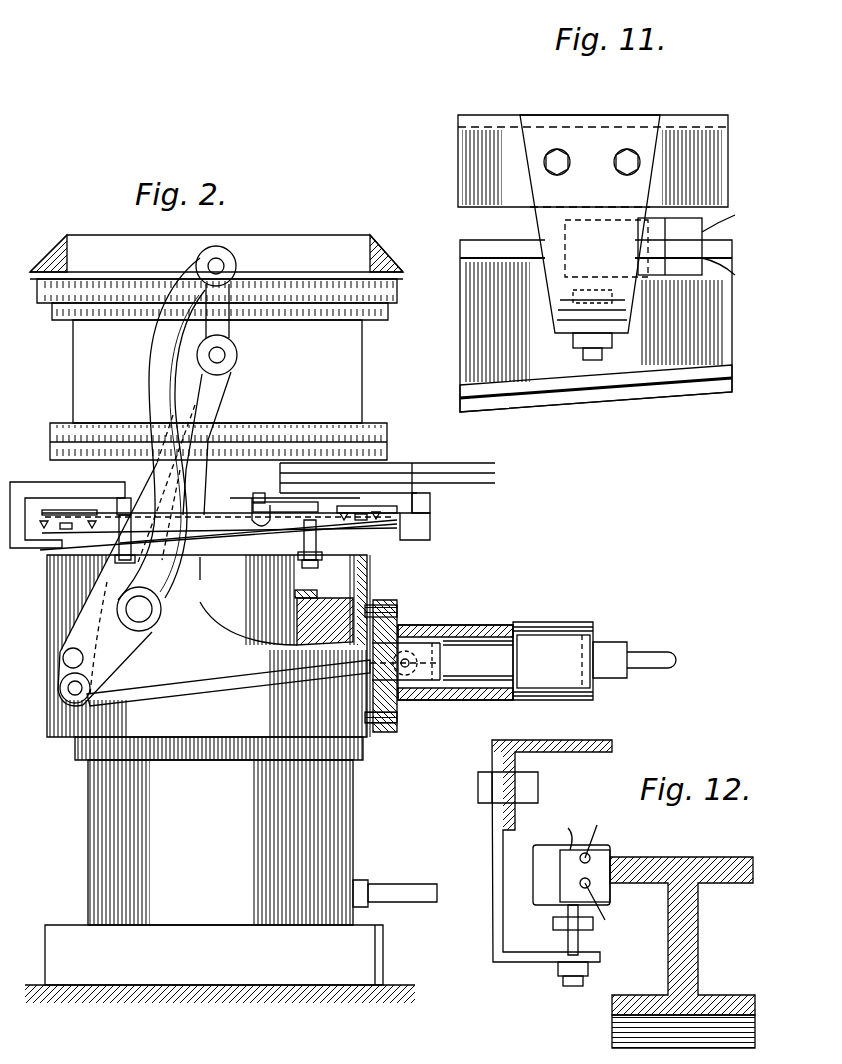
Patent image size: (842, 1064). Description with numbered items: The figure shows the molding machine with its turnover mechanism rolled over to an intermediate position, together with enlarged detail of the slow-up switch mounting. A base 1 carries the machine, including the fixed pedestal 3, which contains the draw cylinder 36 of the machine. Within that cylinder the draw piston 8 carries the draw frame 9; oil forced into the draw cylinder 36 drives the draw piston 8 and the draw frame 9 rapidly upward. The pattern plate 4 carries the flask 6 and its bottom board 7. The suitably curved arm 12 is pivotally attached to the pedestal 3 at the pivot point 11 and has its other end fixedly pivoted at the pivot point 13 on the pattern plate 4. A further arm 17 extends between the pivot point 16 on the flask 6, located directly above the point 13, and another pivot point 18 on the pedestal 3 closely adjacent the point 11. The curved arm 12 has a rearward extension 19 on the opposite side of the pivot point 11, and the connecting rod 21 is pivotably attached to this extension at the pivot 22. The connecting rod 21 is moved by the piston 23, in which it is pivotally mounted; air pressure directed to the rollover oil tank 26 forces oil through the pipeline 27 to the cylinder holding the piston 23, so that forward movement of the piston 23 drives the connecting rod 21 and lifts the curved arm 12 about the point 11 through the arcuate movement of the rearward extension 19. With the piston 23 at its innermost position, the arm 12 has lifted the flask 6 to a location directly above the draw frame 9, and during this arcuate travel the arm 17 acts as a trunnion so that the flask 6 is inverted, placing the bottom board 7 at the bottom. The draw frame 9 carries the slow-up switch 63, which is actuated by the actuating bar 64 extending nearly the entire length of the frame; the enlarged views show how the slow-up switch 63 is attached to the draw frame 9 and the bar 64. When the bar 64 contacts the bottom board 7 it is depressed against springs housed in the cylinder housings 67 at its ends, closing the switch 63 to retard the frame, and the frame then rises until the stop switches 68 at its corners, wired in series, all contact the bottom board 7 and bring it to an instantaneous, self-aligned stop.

In FIG. 2, the base 1 is at (66, 915).
In FIG. 2, the pedestal 3 is at (63, 742).
In FIG. 2, the pattern plate 4 is at (393, 292).
In FIG. 2, the flask 6 is at (343, 362).
In FIG. 2, the bottom board 7 is at (388, 448).
In FIG. 2, the draw piston 8 is at (222, 646).
In FIG. 2, the draw frame 9 is at (207, 577).
In FIG. 12, the draw frame 9 is at (696, 940).
In FIG. 2, the pivot point 11 is at (144, 616).
In FIG. 2, the curved arm 12 is at (150, 370).
In FIG. 11, the curved arm 12 is at (700, 120).
In FIG. 2, the pivot point 13 is at (218, 264).
In FIG. 2, the pivot point 16 is at (220, 356).
In FIG. 2, the arm 17 is at (196, 402).
In FIG. 2, the pivot point 18 is at (66, 660).
In FIG. 2, the rearward extension 19 is at (118, 650).
In FIG. 2, the connecting rod 21 is at (250, 680).
In FIG. 2, the pivot 22 is at (80, 692).
In FIG. 2, the piston 23 is at (440, 690).
In FIG. 2, the rollover oil tank 26 is at (488, 600).
In FIG. 2, the pipeline 27 is at (651, 652).
In FIG. 2, the draw cylinder 36 is at (100, 838).
In FIG. 2, the slow-up switch 63 is at (258, 512).
In FIG. 11, the slow-up switch 63 is at (680, 276).
In FIG. 12, the slow-up switch 63 is at (563, 845).
In FIG. 2, the actuating bar 64 is at (125, 495).
In FIG. 11, the actuating bar 64 is at (497, 115).
In FIG. 12, the actuating bar 64 is at (545, 741).
In FIG. 2, the cylinder housing 67 is at (310, 540).
In FIG. 2, the stop switches 68 is at (382, 505).